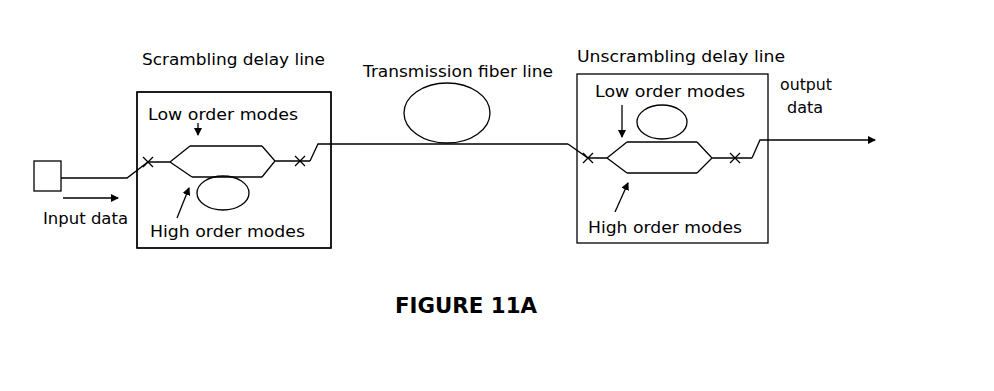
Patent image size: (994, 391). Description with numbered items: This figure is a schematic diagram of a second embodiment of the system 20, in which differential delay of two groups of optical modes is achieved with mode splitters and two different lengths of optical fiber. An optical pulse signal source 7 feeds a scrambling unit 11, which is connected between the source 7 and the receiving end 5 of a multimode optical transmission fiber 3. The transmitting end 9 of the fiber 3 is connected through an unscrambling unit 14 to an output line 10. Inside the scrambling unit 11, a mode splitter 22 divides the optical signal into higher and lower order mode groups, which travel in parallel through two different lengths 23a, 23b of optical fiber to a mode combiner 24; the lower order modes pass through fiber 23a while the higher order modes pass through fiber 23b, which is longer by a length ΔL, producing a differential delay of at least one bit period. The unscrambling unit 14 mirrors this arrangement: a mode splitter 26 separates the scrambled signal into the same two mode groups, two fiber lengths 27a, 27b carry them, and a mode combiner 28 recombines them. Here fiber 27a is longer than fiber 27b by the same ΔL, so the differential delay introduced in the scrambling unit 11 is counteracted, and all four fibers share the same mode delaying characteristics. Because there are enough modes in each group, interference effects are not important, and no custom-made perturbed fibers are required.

The system 20 is at (117, 33).
The optical pulse signal source 7 is at (53, 186).
The scrambling unit 11 is at (143, 92).
The mode splitter 22 is at (172, 166).
The optical fiber length 23a is at (215, 145).
The optical fiber length 23b is at (233, 210).
The mode combiner 24 is at (276, 165).
The receiving end 5 is at (337, 144).
The multimode optical transmission fiber 3 is at (440, 126).
The transmitting end 9 is at (563, 145).
The unscrambling unit 14 is at (585, 73).
The mode splitter 26 is at (611, 163).
The optical fiber length 27a is at (687, 118).
The optical fiber length 27b is at (649, 173).
The mode combiner 28 is at (713, 162).
The output line 10 is at (806, 141).